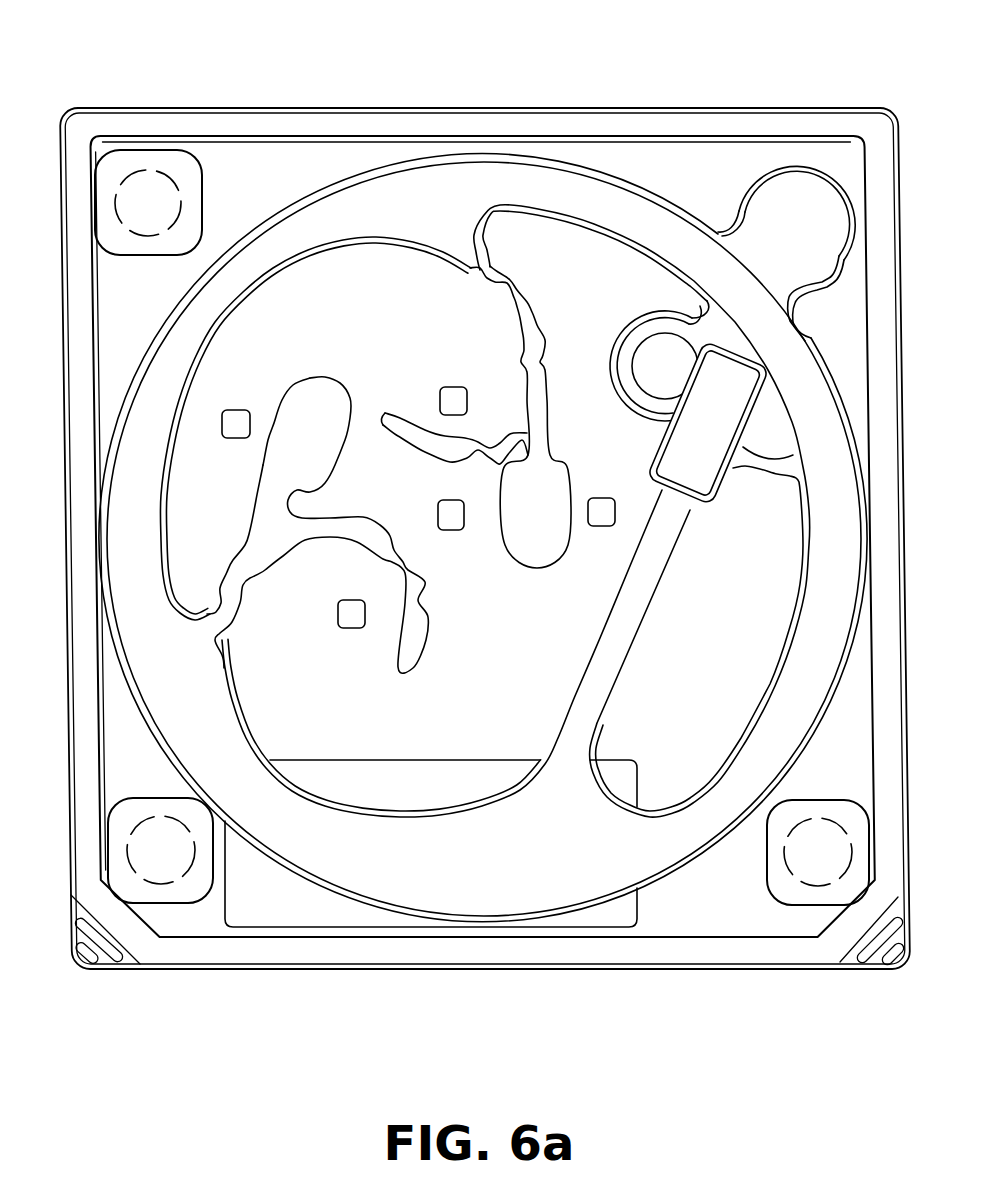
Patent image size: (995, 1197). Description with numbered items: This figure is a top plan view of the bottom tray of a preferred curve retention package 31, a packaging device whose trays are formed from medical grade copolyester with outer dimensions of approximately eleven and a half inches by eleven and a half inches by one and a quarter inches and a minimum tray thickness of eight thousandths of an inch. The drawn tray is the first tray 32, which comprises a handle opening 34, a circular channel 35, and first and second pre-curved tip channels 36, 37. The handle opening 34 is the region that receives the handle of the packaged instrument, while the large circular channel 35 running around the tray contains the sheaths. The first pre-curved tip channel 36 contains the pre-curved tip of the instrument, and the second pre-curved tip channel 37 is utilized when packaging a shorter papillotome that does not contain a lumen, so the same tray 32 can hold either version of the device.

The curve retention package 31 is at (700, 68).
The first tray 32 is at (722, 970).
The handle opening 34 is at (802, 210).
The circular channel 35 is at (820, 633).
The first pre-curved tip channel 36 is at (538, 410).
The second pre-curved tip channel 37 is at (347, 523).